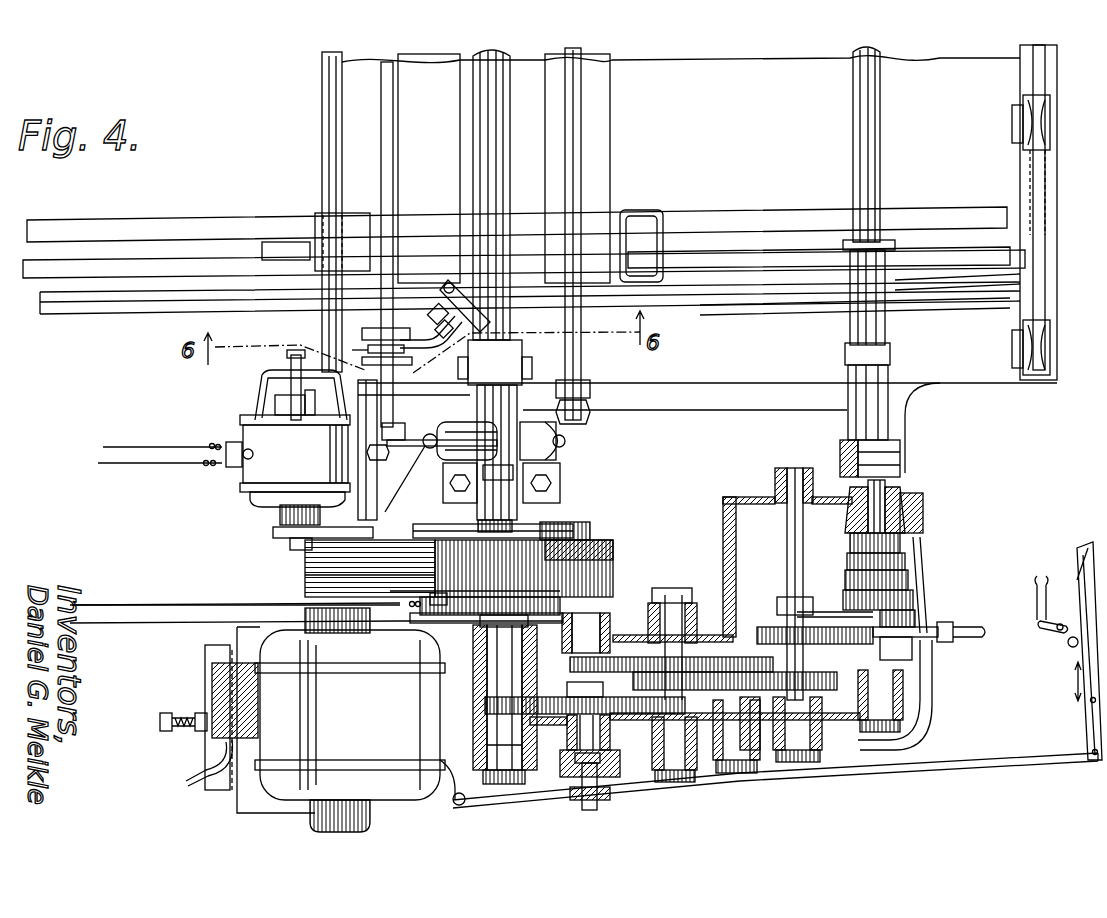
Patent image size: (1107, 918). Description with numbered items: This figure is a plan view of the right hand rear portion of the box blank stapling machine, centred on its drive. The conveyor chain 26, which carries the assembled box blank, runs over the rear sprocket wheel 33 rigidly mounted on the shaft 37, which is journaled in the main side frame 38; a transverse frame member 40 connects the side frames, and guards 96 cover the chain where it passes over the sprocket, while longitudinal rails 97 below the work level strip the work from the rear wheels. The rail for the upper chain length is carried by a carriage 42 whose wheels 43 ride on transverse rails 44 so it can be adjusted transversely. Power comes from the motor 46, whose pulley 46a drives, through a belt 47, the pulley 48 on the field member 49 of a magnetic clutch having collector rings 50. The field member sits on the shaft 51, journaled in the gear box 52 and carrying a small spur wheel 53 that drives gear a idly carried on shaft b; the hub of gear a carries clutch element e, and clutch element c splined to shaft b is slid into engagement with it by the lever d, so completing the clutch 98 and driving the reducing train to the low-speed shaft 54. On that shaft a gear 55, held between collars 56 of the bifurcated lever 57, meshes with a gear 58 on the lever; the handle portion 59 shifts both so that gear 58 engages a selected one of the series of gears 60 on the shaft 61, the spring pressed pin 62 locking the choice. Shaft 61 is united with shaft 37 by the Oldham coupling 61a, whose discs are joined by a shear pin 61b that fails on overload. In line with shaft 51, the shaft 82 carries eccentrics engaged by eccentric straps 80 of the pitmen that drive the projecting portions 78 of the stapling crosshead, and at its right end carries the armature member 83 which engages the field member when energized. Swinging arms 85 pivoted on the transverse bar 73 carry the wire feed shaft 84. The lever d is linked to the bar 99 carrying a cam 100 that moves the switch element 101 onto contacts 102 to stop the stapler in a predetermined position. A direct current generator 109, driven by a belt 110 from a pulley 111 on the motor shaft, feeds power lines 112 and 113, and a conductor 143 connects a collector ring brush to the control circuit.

The conveyor chain 26 is at (125, 300).
The rear sprocket wheel 33 is at (968, 300).
The shaft 37 is at (855, 115).
The main side frame 38 is at (705, 396).
The transverse frame member 40 is at (640, 102).
The carriage 42 is at (120, 228).
The wheel 43 is at (1024, 118).
The transverse rail 44 is at (330, 107).
The motor 46 is at (335, 675).
The pulley 46a is at (305, 560).
The belt 47 is at (305, 580).
The pulley 48 is at (612, 548).
The field member 49 is at (590, 530).
The collector rings 50 is at (560, 610).
The shaft 51 is at (485, 790).
The gear box 52 is at (530, 770).
The small spur wheel 53 is at (485, 705).
The shaft 54 is at (778, 485).
The gear 55 is at (768, 627).
The collars 56 is at (800, 595).
The bifurcated lever 57 is at (880, 612).
The gear 58 is at (812, 612).
The handle portion 59 is at (925, 628).
The series of gears 60 is at (895, 563).
The shaft 61 is at (875, 505).
The Oldham coupling 61a is at (860, 448).
The shear pin 61b is at (842, 458).
The spring pressed pin 62 is at (975, 640).
The transverse bar 73 is at (497, 180).
The projecting portion 78 is at (560, 470).
The eccentric strap 80 is at (565, 443).
The shaft 82 is at (540, 525).
The armature member 83 is at (560, 530).
The transverse shaft 84 is at (390, 178).
The swinging arm 85 is at (408, 440).
The guard 96 is at (760, 312).
The longitudinal rail 97 is at (708, 255).
The clutch 98 is at (665, 745).
The bar 99 is at (1087, 540).
The cam 100 is at (1080, 583).
The switch element 101 is at (1070, 643).
The contacts 102 is at (1036, 589).
The direct current generator 109 is at (258, 437).
The belt 110 is at (275, 532).
The pulley 111 is at (377, 520).
The power line 112 is at (165, 445).
The power line 113 is at (172, 466).
The conductor 143 is at (120, 603).
The gear a is at (640, 700).
The shaft b is at (598, 805).
The clutch element c is at (572, 750).
The lever d is at (928, 768).
The clutch element e is at (548, 725).